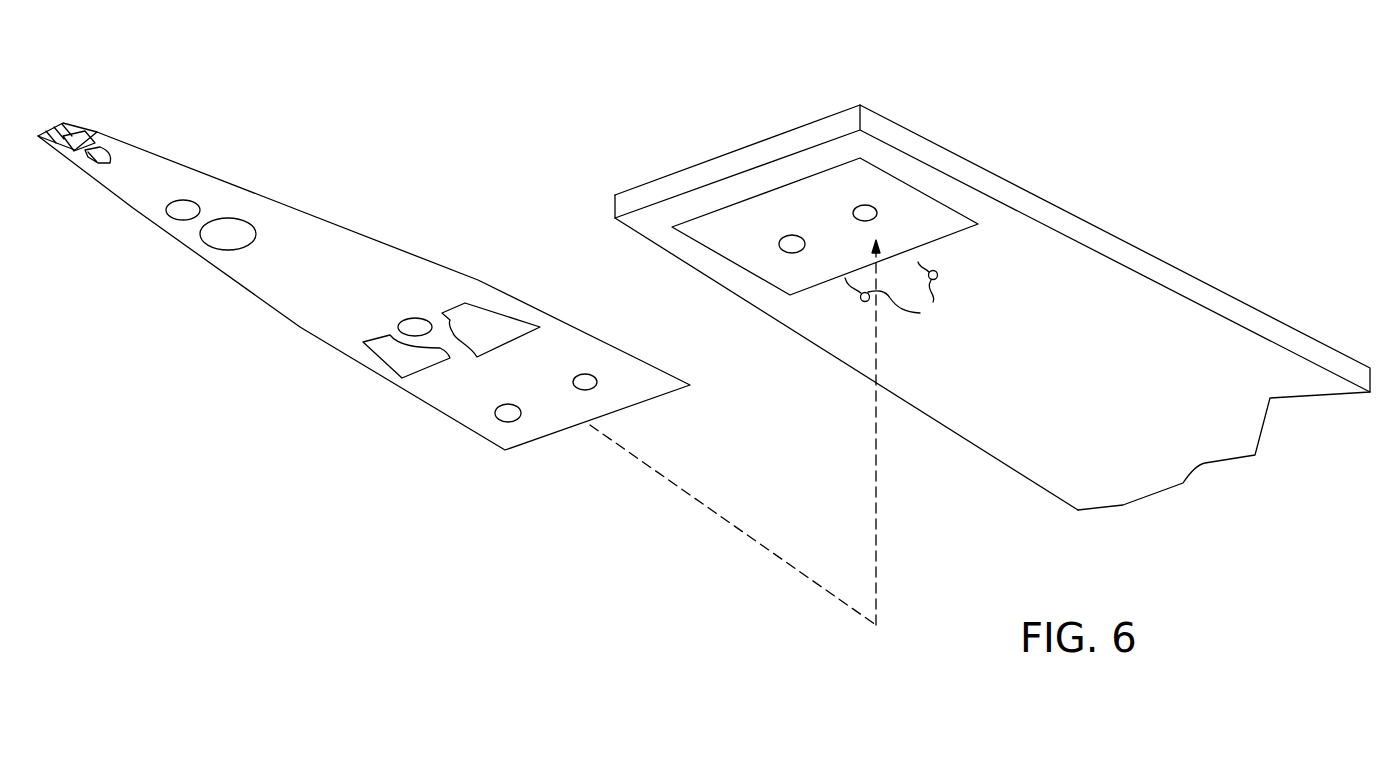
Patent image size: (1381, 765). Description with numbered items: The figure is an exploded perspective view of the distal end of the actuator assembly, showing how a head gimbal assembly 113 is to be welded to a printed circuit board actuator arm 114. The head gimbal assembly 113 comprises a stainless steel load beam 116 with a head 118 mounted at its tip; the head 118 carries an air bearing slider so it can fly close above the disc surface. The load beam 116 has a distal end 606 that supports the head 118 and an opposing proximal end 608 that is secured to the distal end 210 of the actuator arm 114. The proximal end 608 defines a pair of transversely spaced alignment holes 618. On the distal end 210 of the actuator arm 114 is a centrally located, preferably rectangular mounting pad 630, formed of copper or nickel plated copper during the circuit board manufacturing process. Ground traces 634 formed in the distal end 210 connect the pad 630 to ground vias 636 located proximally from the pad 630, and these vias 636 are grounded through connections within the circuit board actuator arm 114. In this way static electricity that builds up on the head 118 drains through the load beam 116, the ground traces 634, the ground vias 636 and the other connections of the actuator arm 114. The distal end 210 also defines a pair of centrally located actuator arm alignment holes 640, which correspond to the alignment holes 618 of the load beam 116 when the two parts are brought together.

The head gimbal assembly 113 is at (390, 147).
The actuator arm 114 is at (1130, 160).
The load beam 116 is at (285, 190).
The head 118 is at (90, 134).
The distal end of the actuator arm 210 is at (803, 313).
The distal end of the load beam 606 is at (138, 192).
The proximal end of the load beam 608 is at (582, 337).
The alignment holes 618 is at (575, 382).
The mounting pad 630 is at (743, 252).
The ground traces 634 is at (913, 310).
The ground vias 636 is at (863, 302).
The actuator arm alignment holes 640 is at (863, 212).